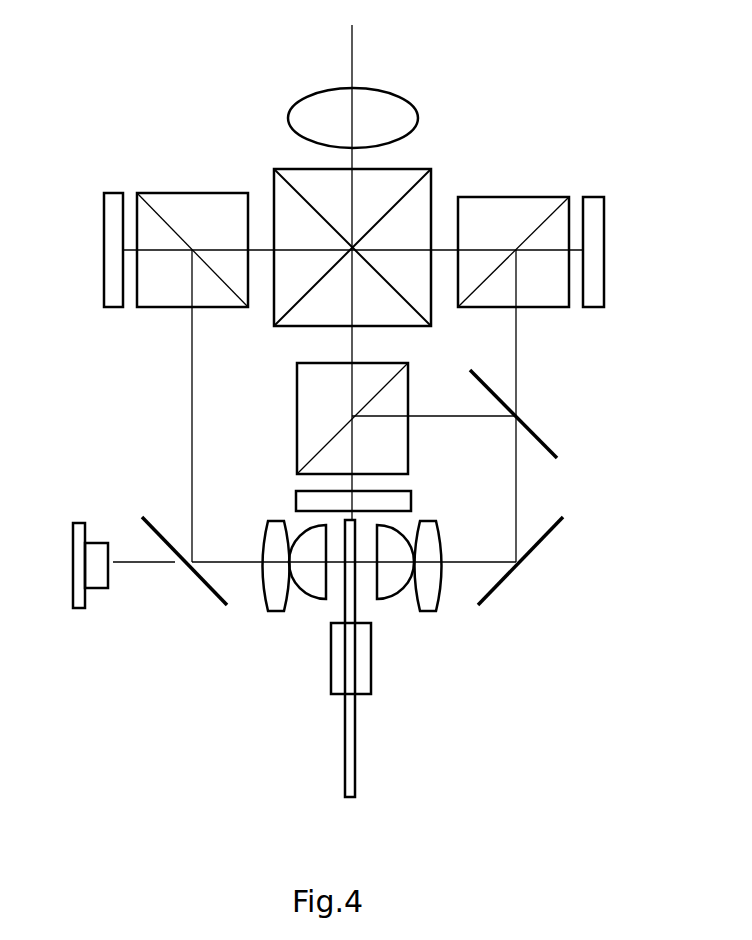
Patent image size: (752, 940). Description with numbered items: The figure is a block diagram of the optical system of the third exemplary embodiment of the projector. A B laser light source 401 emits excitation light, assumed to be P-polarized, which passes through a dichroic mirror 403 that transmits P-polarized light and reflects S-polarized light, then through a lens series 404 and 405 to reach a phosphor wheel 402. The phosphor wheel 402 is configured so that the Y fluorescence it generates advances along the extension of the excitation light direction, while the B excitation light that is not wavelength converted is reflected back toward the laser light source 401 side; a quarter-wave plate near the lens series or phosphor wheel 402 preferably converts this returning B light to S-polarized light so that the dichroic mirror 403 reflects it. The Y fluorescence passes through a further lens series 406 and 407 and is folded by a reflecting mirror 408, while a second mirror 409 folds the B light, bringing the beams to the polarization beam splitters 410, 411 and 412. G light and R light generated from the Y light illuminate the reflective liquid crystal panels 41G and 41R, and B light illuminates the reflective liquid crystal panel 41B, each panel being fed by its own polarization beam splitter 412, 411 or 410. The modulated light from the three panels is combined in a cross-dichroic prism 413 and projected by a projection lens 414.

The B laser light source 401 is at (78, 612).
The phosphor wheel 402 is at (356, 742).
The dichroic mirror 403 is at (205, 578).
The lens series 404 is at (275, 612).
The lens series 405 is at (320, 600).
The lens series 406 is at (383, 600).
The lens series 407 is at (428, 604).
The reflecting mirror 408 is at (548, 538).
The mirror 409 is at (540, 432).
The polarization beam splitter 410 is at (475, 203).
The polarization beam splitter 411 is at (400, 442).
The polarization beam splitter 412 is at (175, 200).
The cross-dichroic prism 413 is at (400, 177).
The projection lens 414 is at (382, 93).
The reflective liquid crystal panel 41B is at (115, 306).
The reflective liquid crystal panel 41G is at (297, 500).
The reflective liquid crystal panel 41R is at (597, 200).